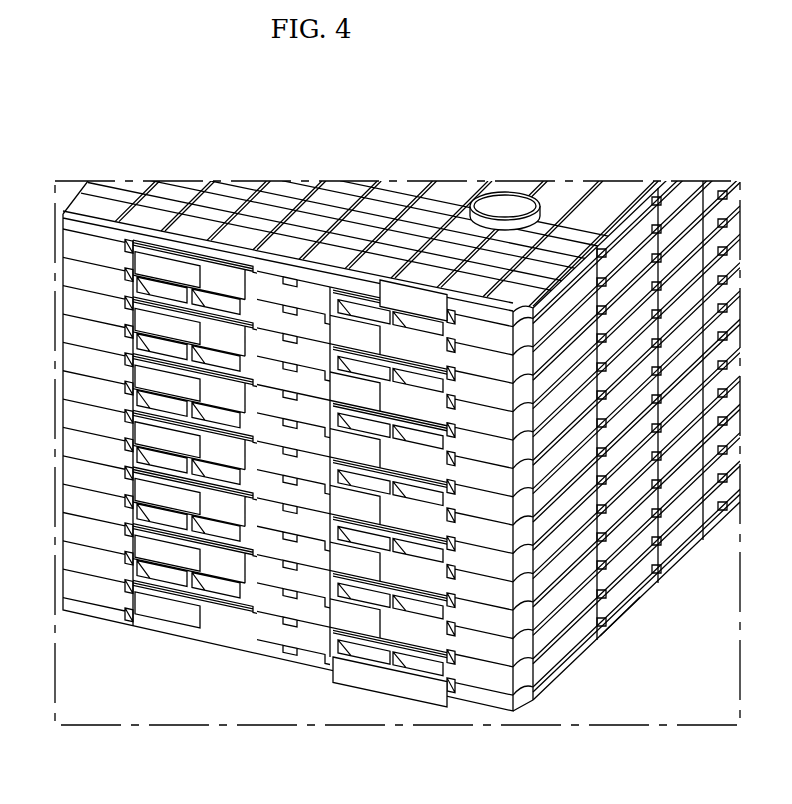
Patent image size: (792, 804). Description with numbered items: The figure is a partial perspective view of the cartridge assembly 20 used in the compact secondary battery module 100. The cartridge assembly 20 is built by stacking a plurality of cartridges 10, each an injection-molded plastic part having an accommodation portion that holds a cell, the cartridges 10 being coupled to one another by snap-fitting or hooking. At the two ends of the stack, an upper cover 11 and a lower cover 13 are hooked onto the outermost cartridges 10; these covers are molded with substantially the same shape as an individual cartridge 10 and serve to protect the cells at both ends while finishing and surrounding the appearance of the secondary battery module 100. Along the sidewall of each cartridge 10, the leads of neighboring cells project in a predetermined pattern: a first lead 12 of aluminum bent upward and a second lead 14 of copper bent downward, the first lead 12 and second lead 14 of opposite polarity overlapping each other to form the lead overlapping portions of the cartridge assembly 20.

The secondary battery module 100 is at (426, 460).
The cartridge 10 is at (426, 446).
The upper cover 11 is at (378, 205).
The first lead 12 is at (160, 270).
The lower cover 13 is at (640, 586).
The second lead 14 is at (223, 283).
The cartridge assembly 20 is at (636, 620).